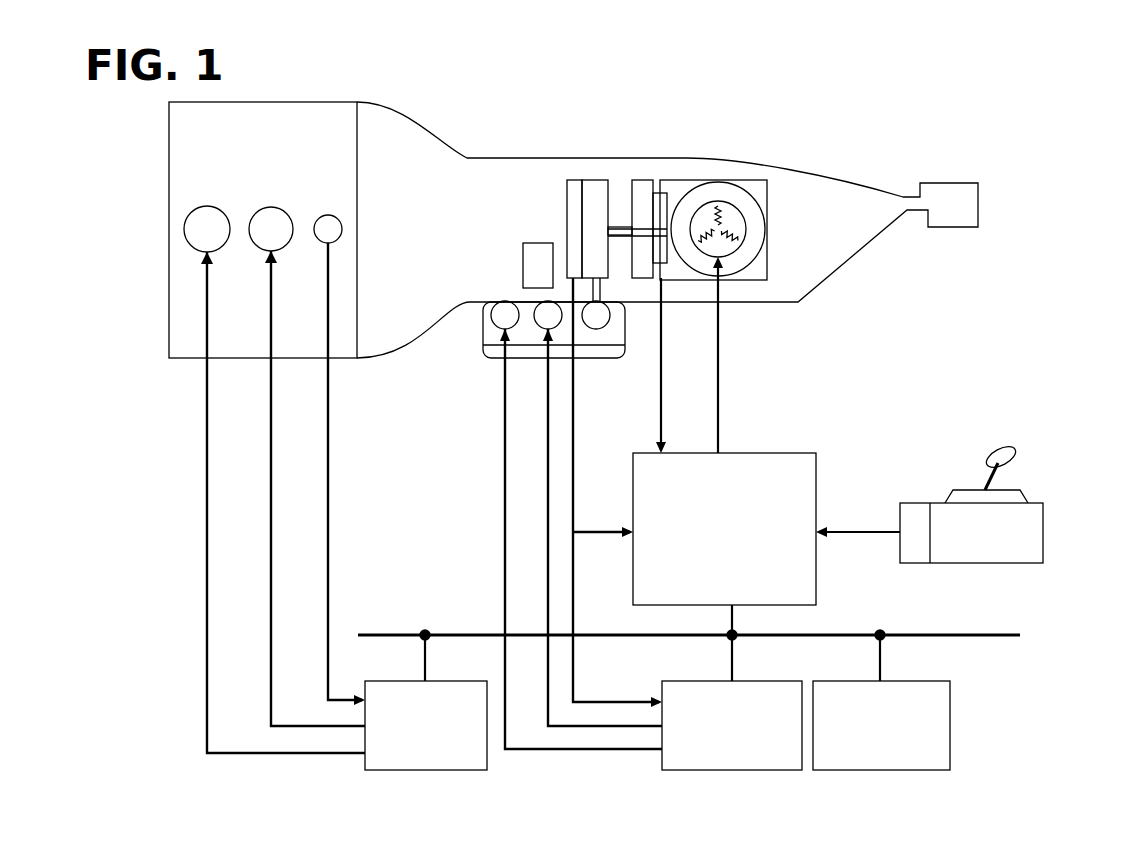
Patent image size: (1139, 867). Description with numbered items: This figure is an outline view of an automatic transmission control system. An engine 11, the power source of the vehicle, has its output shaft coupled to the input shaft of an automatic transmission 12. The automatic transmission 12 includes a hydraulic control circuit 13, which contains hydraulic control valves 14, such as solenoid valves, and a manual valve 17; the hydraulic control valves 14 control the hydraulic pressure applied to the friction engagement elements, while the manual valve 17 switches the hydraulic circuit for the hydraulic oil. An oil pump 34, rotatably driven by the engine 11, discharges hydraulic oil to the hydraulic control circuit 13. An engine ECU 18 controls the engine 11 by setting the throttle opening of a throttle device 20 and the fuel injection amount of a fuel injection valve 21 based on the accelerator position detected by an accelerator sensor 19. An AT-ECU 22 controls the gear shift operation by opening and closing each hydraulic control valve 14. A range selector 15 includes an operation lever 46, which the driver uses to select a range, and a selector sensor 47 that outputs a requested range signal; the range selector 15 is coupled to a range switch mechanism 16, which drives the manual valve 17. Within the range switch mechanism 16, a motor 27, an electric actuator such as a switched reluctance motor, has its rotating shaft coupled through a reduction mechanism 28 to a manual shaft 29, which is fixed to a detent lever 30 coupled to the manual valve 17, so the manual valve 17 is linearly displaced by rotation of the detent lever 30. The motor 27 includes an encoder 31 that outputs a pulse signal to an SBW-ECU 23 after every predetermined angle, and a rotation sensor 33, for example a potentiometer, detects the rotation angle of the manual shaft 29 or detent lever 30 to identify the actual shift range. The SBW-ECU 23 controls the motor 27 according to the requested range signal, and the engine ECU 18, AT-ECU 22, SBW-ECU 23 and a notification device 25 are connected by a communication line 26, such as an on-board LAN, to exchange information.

The engine 11 is at (262, 102).
The automatic transmission 12 is at (492, 158).
The hydraulic control circuit 13 is at (483, 335).
The hydraulic control valves 14 is at (497, 302).
The range selector 15 is at (1043, 530).
The range switch mechanism 16 is at (608, 138).
The manual valve 17 is at (596, 329).
The engine ECU 18 is at (425, 772).
The accelerator sensor 19 is at (326, 215).
The throttle device 20 is at (205, 206).
The fuel injection valve 21 is at (268, 207).
The AT-ECU 22 is at (732, 772).
The SBW-ECU 23 is at (775, 453).
The notification device 25 is at (880, 772).
The communication line 26 is at (995, 640).
The motor 27 is at (713, 180).
The reduction mechanism 28 is at (642, 180).
The manual shaft 29 is at (620, 226).
The detent lever 30 is at (597, 180).
The encoder 31 is at (660, 193).
The rotation sensor 33 is at (575, 180).
The oil pump 34 is at (540, 243).
The operation lever 46 is at (1005, 450).
The selector sensor 47 is at (913, 503).